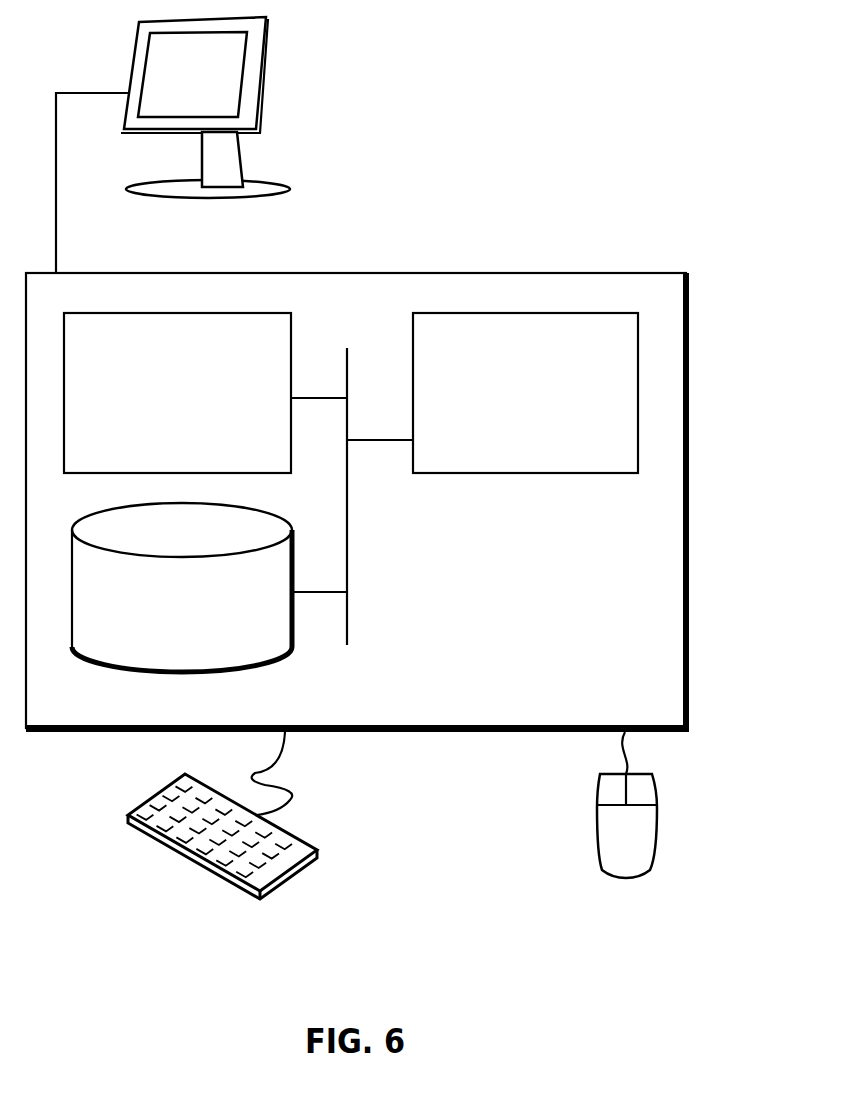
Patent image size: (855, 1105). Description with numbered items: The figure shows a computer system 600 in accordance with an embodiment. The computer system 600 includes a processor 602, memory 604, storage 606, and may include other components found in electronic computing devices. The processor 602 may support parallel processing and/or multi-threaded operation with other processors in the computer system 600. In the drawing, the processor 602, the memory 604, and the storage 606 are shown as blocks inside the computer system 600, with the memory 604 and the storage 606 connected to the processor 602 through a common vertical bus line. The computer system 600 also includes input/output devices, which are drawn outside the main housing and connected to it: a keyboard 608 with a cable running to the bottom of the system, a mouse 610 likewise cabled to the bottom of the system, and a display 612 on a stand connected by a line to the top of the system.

The computer system 600 is at (402, 250).
The processor 602 is at (550, 404).
The memory 604 is at (200, 404).
The storage 606 is at (207, 616).
The keyboard 608 is at (145, 835).
The mouse 610 is at (648, 846).
The display 612 is at (173, 145).